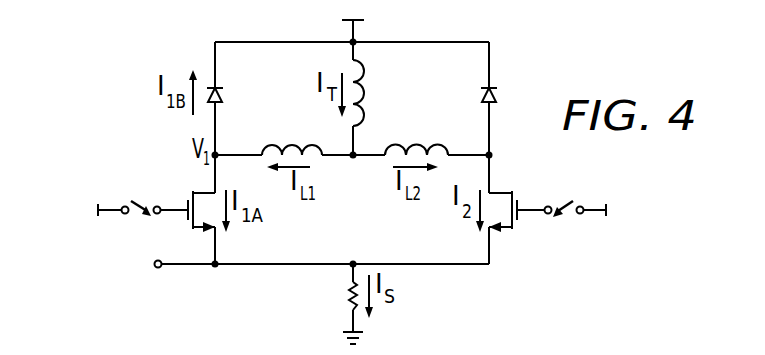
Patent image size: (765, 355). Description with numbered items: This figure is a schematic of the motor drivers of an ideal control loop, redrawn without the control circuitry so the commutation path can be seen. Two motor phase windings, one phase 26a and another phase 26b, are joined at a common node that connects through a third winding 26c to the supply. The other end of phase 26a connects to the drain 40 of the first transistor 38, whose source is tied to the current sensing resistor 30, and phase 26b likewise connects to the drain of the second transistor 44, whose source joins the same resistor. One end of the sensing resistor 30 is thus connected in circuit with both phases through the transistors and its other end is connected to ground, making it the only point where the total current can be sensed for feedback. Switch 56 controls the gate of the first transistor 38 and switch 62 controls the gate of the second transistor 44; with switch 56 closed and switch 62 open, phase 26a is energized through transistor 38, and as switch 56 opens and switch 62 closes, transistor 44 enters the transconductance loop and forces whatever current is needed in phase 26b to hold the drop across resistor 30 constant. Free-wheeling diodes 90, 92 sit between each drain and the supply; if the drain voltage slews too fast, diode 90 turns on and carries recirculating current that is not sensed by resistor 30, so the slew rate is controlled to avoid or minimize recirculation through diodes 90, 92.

The one phase 26a is at (284, 141).
The another phase 26b is at (424, 141).
The third inductor 26c is at (370, 88).
The current sensing resistor 30 is at (347, 299).
The first transistor 38 is at (190, 193).
The drain 40 is at (218, 153).
The second transistor 44 is at (512, 186).
The switch 56 is at (134, 216).
The switch 62 is at (558, 202).
The free-wheeling diode 90 is at (222, 95).
The free-wheeling diode 92 is at (496, 95).